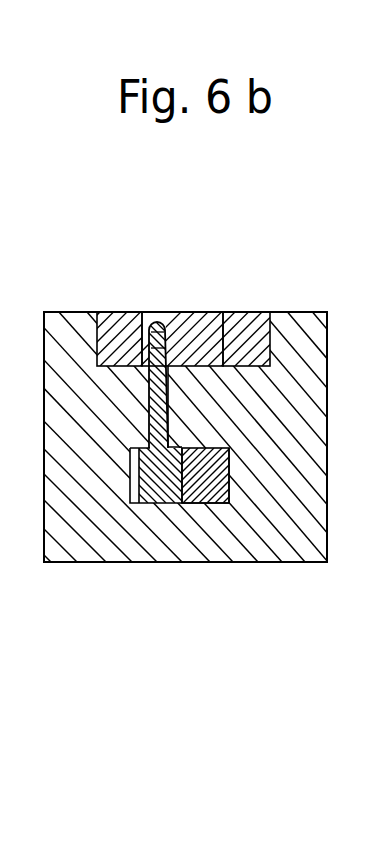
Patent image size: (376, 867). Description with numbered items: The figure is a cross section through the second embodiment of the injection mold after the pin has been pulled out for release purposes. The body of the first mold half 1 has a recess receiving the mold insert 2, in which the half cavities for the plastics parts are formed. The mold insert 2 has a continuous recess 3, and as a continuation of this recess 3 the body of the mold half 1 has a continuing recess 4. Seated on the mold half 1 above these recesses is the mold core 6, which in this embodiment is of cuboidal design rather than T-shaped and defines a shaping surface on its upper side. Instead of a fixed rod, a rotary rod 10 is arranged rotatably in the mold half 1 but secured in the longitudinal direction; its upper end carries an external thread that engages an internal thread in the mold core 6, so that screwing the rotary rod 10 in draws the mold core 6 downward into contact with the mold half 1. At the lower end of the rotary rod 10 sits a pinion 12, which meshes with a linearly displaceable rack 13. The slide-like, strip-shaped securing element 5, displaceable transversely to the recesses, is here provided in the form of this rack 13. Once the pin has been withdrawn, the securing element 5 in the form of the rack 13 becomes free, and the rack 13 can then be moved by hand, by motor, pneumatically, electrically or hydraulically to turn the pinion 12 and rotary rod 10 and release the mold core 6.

The mold half 1 is at (267, 535).
The mold insert 2 is at (115, 325).
The recess 3 is at (193, 366).
The continuing recess 4 is at (168, 423).
The securing element 5 is at (212, 477).
The mold core 6 is at (176, 321).
The rotary rod 10 is at (170, 390).
The pinion 12 is at (156, 490).
The rack 13 is at (206, 500).